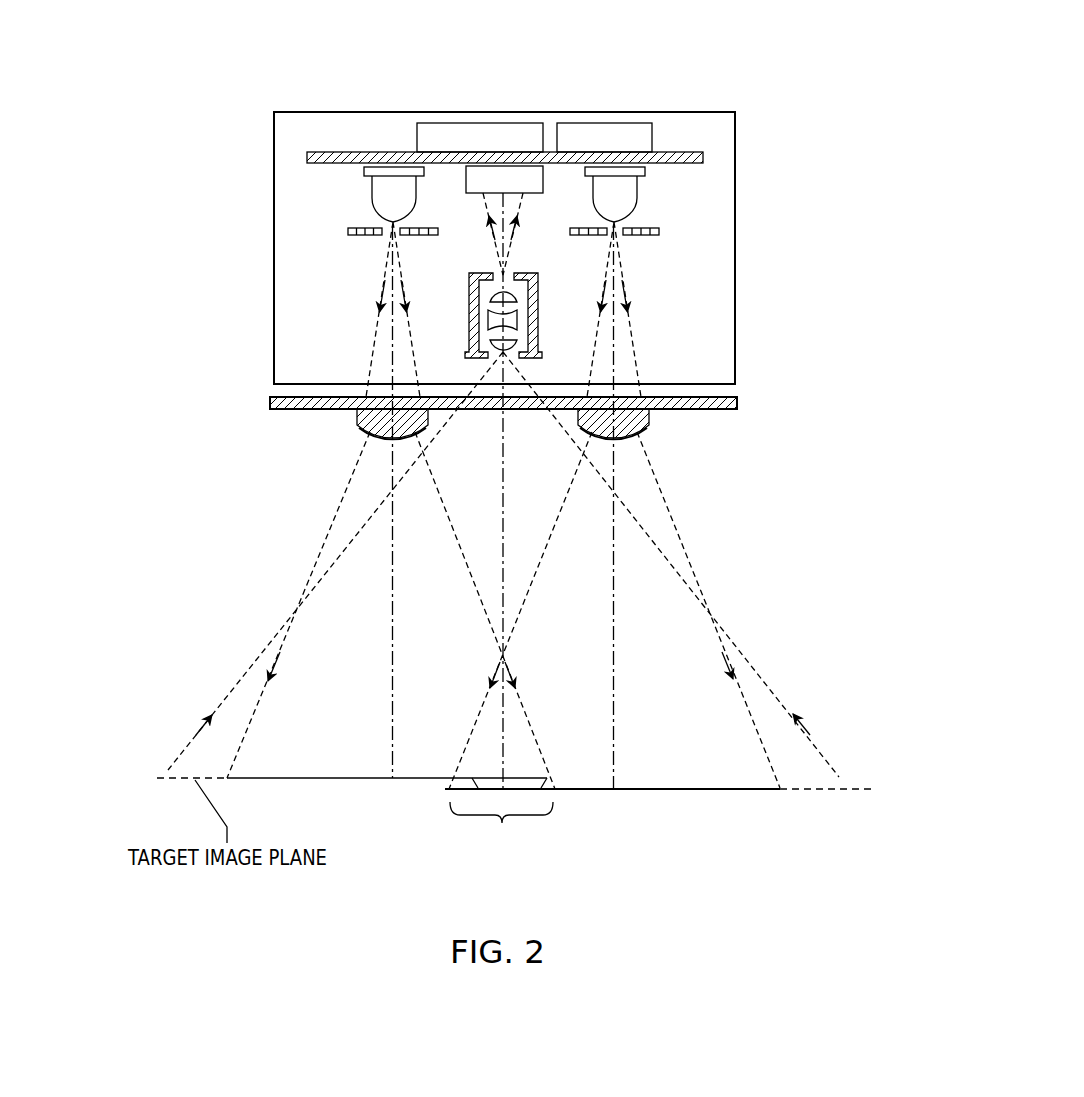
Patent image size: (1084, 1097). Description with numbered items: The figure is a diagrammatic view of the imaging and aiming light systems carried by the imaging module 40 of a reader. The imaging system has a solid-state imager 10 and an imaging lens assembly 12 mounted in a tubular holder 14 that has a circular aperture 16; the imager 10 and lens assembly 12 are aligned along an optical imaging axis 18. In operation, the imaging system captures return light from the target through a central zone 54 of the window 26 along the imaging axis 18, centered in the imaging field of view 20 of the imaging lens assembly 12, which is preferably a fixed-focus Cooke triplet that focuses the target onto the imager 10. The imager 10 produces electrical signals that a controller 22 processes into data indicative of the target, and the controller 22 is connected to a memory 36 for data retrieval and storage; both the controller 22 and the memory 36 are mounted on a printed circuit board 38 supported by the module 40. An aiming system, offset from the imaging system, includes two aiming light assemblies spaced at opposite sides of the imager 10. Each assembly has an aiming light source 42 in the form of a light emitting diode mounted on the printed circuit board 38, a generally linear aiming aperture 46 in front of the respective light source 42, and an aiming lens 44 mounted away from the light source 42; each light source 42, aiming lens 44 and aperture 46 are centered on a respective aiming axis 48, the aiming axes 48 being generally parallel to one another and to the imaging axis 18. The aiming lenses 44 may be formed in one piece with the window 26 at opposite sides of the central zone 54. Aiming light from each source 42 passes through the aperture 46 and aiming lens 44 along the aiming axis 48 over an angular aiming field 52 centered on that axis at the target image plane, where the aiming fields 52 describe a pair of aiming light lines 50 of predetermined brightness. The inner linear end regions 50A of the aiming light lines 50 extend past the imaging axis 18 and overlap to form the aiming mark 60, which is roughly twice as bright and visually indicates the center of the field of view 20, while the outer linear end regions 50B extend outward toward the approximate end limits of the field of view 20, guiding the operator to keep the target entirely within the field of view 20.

The imaging module 40 is at (533, 201).
The printed circuit board 38 is at (735, 112).
The controller 22 is at (417, 137).
The memory 36 is at (652, 137).
The solid-state imager 10 is at (466, 179).
The aiming light source 42 is at (778, 150).
The aiming aperture 46 is at (818, 293).
The imaging lens assembly 12 is at (659, 277).
The tubular holder 14 is at (469, 290).
The circular aperture 16 is at (469, 349).
The imaging field of view 20 is at (268, 643).
The imaging axis 18 is at (502, 467).
The window 26 is at (272, 403).
The aiming lens 44 is at (669, 434).
The central zone 54 is at (515, 410).
The aiming field 52 is at (692, 521).
The aiming axis 48 is at (392, 592).
The aiming light line 50 is at (686, 788).
The inner linear end region 50A is at (472, 777).
The outer linear end region 50B is at (343, 780).
The aiming mark 60 is at (514, 830).